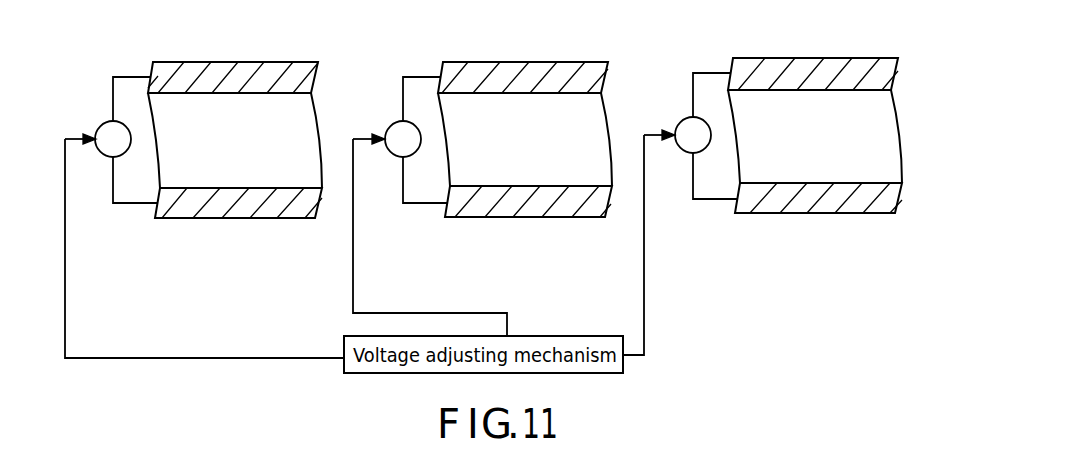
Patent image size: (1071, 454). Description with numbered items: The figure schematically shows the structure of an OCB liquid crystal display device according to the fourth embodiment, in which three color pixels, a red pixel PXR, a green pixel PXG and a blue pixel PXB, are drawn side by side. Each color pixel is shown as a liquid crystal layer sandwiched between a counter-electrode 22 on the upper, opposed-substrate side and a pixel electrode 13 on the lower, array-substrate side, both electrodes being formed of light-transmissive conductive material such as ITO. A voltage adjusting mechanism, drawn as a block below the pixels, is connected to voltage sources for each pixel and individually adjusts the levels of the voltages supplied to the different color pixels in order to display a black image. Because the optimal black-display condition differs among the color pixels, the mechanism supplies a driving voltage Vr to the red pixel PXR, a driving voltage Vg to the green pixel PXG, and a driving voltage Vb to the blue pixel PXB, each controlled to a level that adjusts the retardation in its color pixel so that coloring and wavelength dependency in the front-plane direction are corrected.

The counter-electrode 22 is at (283, 66).
The pixel electrode 13 is at (282, 220).
The red pixel PXR is at (235, 140).
The green pixel PXG is at (525, 139).
The blue pixel PXB is at (815, 136).
The driving voltage Vr is at (126, 140).
The driving voltage Vg is at (416, 140).
The driving voltage Vb is at (706, 136).